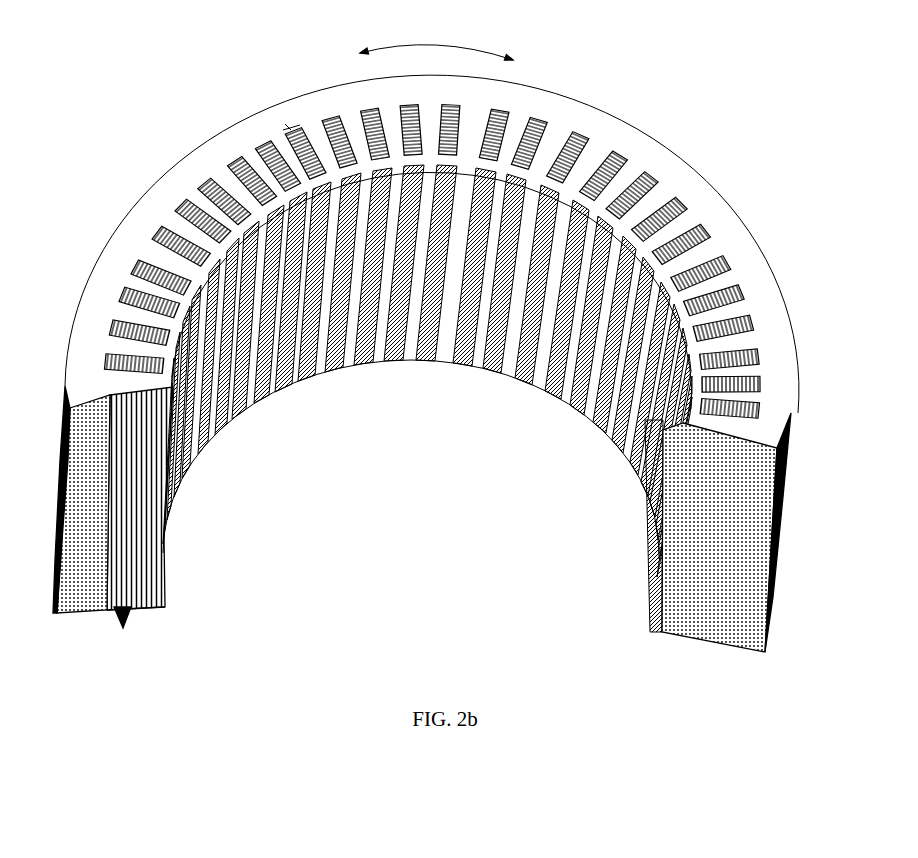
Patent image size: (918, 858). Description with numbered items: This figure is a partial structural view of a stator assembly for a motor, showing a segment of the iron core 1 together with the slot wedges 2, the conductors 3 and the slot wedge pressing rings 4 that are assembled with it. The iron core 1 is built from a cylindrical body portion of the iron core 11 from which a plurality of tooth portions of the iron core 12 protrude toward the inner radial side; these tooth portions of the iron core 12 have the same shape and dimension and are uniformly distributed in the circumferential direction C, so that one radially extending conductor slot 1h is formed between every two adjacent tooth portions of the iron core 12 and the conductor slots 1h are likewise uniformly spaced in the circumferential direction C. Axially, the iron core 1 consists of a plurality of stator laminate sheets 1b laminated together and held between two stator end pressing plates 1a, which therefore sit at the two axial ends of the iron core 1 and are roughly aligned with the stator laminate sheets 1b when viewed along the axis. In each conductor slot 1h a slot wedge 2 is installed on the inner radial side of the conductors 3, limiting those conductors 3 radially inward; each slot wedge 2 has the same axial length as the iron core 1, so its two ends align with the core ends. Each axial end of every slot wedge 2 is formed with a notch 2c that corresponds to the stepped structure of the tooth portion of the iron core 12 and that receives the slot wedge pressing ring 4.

The iron core 1 is at (670, 148).
The stator end pressing plate 1a is at (760, 307).
The stator laminate sheet 1b is at (790, 493).
The conductor slot 1h is at (287, 127).
The body portion of the iron core 11 is at (640, 140).
The tooth portion of the iron core 12 is at (673, 220).
The slot wedge 2 is at (302, 177).
The notch 2c is at (157, 603).
The conductor 3 is at (283, 130).
The slot wedge pressing ring 4 is at (353, 140).
The circumferential direction C is at (436, 37).